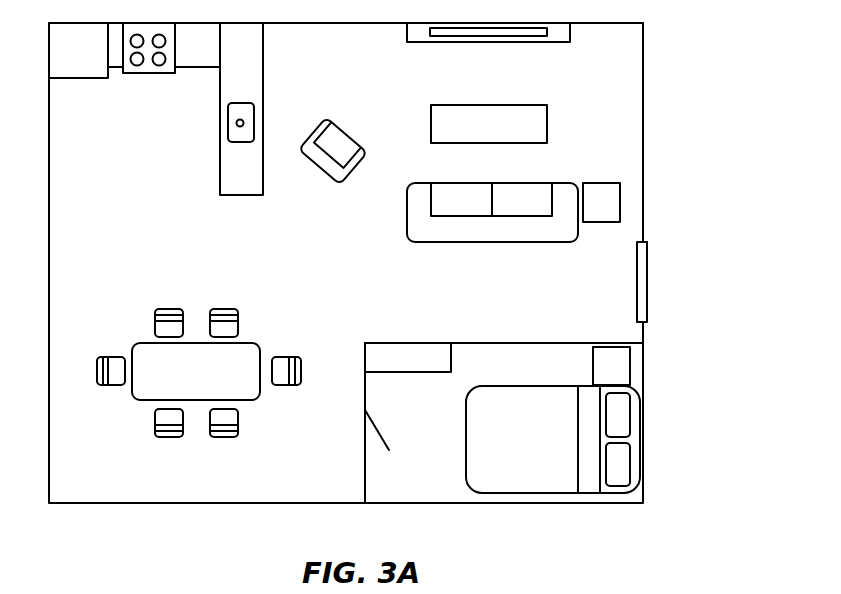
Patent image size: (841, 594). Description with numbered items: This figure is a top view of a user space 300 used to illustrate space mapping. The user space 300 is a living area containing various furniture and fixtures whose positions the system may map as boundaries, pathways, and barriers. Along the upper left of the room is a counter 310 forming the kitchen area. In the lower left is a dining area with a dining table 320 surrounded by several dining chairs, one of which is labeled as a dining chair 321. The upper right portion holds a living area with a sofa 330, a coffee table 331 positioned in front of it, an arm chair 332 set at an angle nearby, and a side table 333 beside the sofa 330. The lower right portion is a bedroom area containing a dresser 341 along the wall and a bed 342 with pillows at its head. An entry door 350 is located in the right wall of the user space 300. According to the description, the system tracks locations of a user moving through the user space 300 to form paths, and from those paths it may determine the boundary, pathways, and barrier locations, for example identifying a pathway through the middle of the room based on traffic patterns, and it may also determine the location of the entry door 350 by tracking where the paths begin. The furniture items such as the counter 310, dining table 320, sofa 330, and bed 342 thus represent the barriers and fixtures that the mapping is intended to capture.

The user space 300 is at (655, 88).
The counter 310 is at (263, 93).
The dining table 320 is at (257, 345).
The dining chair 321 is at (235, 308).
The sofa 330 is at (565, 183).
The coffee table 331 is at (522, 103).
The arm chair 332 is at (348, 128).
The side table 333 is at (607, 223).
The dresser 341 is at (425, 342).
The bed 342 is at (510, 383).
The entry door 350 is at (649, 268).